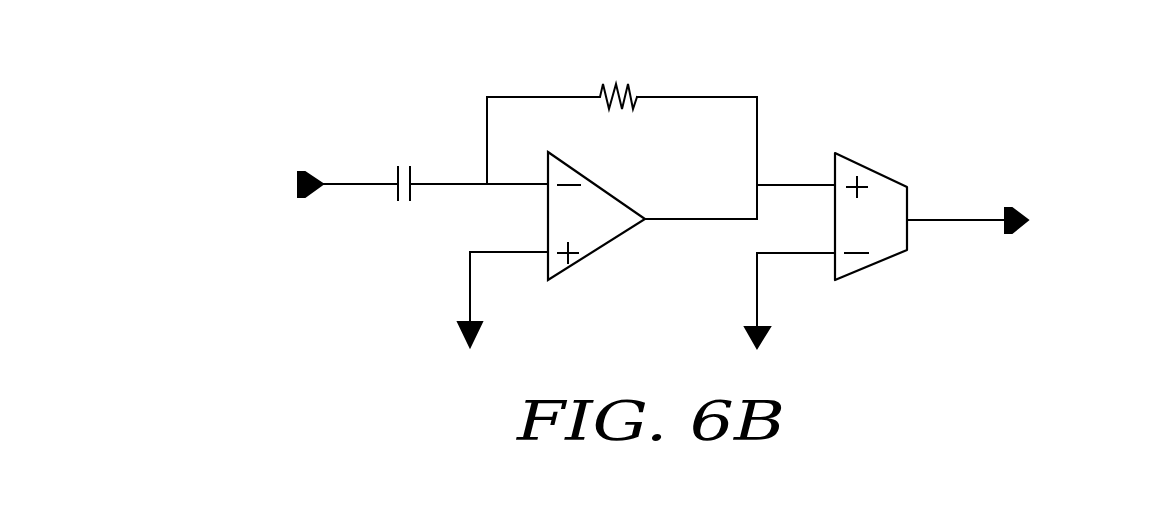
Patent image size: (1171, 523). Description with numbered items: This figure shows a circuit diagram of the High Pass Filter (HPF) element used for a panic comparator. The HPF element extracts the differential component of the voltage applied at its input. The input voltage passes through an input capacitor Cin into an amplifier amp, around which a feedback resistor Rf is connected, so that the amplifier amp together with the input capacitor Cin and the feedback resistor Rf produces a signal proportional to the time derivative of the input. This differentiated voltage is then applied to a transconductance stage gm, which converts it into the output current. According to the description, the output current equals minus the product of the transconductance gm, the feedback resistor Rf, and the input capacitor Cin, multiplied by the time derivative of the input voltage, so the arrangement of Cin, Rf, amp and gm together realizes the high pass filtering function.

The input capacitor Cin is at (404, 169).
The feedback resistor Rf is at (617, 77).
The amplifier amp is at (596, 216).
The transconductance stage gm is at (871, 216).